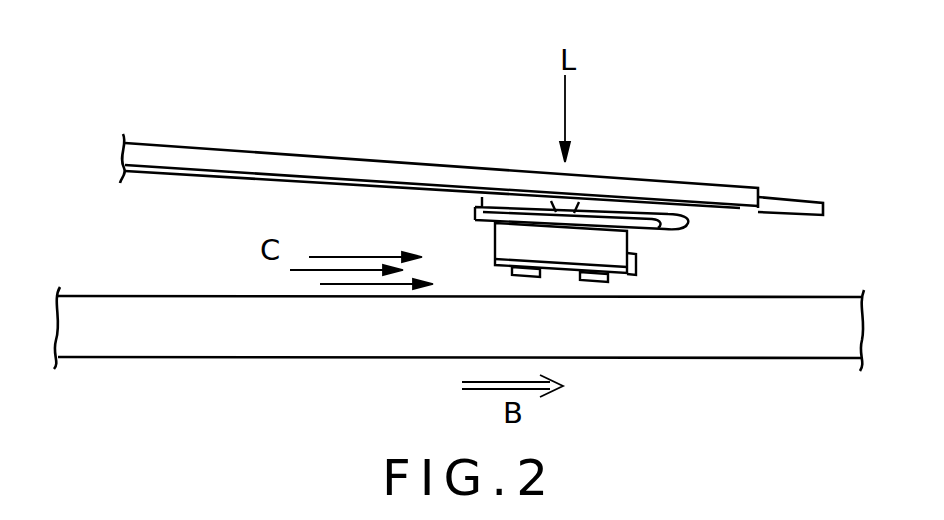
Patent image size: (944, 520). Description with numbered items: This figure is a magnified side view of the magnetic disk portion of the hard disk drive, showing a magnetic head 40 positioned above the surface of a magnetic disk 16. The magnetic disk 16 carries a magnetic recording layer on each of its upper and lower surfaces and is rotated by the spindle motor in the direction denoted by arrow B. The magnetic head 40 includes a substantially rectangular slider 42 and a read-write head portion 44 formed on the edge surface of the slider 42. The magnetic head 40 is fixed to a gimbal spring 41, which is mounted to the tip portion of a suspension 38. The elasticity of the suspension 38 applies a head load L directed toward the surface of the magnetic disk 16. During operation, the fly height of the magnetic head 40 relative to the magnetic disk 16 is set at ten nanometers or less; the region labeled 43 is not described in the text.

The magnetic disk 16 is at (287, 350).
The suspension 38 is at (300, 158).
The magnetic head 40 is at (470, 243).
The gimbal spring 41 is at (477, 206).
The slider 42 is at (593, 242).
The detection portion 43 is at (558, 280).
The read-write head portion 44 is at (637, 263).